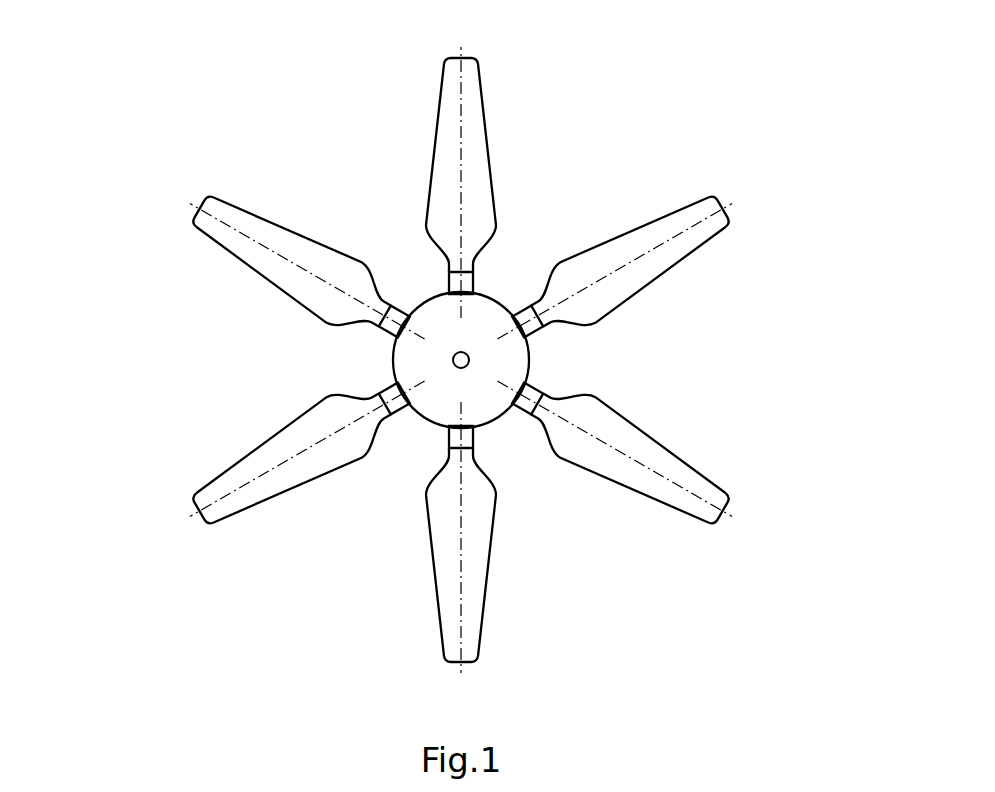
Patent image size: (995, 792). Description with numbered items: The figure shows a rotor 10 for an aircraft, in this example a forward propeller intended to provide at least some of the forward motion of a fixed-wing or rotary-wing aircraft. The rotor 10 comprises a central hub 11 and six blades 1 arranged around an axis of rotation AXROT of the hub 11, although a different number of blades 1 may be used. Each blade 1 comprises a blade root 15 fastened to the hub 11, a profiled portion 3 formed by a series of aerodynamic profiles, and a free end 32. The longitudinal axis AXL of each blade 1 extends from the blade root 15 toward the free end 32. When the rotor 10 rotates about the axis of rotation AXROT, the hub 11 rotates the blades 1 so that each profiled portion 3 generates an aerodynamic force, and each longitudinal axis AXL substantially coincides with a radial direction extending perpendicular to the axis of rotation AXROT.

The blade 1 is at (465, 365).
The profiled portion 3 is at (467, 360).
The rotor 10 is at (300, 609).
The hub 11 is at (528, 369).
The blade root 15 is at (516, 317).
The free end 32 is at (463, 363).
The longitudinal axis AXL is at (456, 360).
The axis of rotation AXROT is at (470, 360).